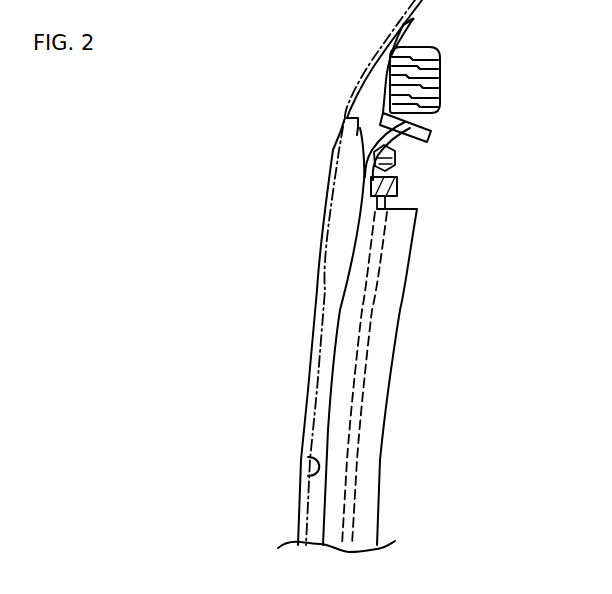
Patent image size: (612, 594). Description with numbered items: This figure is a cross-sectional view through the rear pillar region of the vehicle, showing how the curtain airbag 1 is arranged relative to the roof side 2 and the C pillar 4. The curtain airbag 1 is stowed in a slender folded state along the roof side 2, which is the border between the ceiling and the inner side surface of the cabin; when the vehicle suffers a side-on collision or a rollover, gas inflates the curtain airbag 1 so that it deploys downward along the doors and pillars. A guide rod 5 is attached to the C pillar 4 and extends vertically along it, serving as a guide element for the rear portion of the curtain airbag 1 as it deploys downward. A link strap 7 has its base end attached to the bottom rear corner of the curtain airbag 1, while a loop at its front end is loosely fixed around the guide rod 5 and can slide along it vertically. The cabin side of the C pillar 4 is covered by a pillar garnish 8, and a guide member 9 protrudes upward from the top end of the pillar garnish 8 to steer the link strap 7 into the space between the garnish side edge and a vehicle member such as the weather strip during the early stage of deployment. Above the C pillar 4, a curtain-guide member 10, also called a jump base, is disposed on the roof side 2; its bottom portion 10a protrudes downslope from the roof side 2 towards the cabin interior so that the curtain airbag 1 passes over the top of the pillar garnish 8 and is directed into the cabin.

The curtain airbag 1 is at (472, 71).
The roof side 2 is at (358, 82).
The C pillar 4 is at (308, 467).
The guide rod 5 is at (348, 488).
The link strap 7 is at (392, 138).
The pillar garnish 8 is at (384, 397).
The guide member 9 is at (400, 148).
The curtain-guide member 10 is at (350, 108).
The bottom portion 10a is at (433, 118).